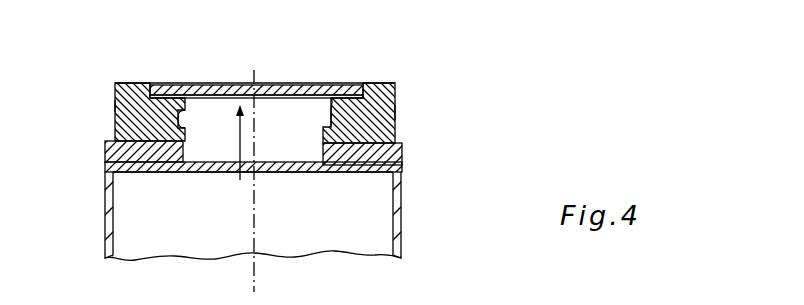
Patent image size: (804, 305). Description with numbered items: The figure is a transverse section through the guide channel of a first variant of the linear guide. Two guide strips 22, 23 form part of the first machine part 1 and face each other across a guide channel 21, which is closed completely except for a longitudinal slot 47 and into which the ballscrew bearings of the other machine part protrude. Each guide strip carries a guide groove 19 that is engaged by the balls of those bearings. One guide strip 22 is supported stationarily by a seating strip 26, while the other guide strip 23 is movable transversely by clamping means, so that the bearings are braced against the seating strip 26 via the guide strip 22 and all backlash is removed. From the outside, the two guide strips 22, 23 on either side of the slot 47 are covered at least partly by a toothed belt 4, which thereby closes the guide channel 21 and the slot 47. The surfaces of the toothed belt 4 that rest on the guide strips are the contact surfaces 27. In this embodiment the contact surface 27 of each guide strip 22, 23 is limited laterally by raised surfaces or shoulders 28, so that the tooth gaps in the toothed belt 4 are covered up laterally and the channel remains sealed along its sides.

The first machine part 1 is at (108, 232).
The toothed belt 4 is at (240, 92).
The guide grooves 19 is at (183, 111).
The guide channel 21 is at (273, 178).
The guide strip 22 is at (140, 106).
The guide strip 23 is at (395, 114).
The seating strip 26 is at (137, 152).
The contact surfaces 27 is at (172, 86).
The raised surfaces or shoulders 28 is at (122, 83).
The longitudinal slot 47 is at (233, 172).